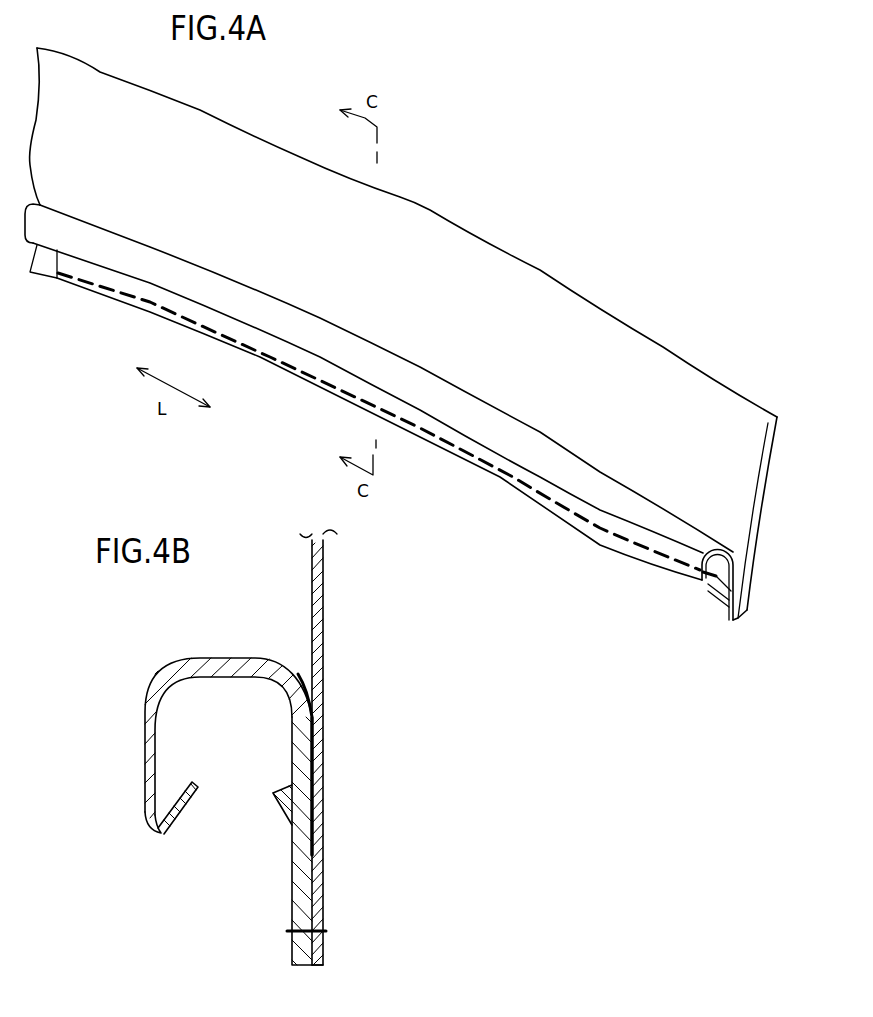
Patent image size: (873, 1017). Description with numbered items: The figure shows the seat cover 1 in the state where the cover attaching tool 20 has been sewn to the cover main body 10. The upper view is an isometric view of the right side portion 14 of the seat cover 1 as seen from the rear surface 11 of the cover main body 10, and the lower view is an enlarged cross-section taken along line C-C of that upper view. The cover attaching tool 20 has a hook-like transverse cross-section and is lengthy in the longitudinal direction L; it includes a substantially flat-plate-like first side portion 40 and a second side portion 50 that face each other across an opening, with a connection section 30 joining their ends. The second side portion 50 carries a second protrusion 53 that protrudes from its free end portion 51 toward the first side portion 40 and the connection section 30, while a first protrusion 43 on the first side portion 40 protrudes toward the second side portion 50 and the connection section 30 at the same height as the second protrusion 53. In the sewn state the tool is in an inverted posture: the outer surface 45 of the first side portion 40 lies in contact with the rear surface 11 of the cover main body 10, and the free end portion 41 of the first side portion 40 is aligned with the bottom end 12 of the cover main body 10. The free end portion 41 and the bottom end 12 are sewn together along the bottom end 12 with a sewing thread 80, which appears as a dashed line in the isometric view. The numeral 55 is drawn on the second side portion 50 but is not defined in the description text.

In FIG. 4A, the seat cover 1 is at (573, 230).
In FIG. 4B, the seat cover 1 is at (363, 637).
In FIG. 4A, the cover main body 10 is at (457, 222).
In FIG. 4B, the cover main body 10 is at (312, 593).
In FIG. 4A, the rear surface 11 is at (510, 328).
In FIG. 4B, the rear surface 11 is at (310, 630).
In FIG. 4A, the bottom end 12 is at (747, 607).
In FIG. 4B, the bottom end 12 is at (321, 953).
In FIG. 4A, the right side portion 14 is at (687, 387).
In FIG. 4B, the right side portion 14 is at (323, 647).
In FIG. 4A, the cover attaching tool 20 is at (379, 432).
In FIG. 4B, the cover attaching tool 20 is at (221, 791).
In FIG. 4A, the connection section 30 is at (580, 458).
In FIG. 4B, the connection section 30 is at (227, 658).
In FIG. 4A, the first side portion 40 is at (618, 568).
In FIG. 4B, the first side portion 40 is at (293, 841).
In FIG. 4A, the free end portion 41 is at (530, 485).
In FIG. 4B, the free end portion 41 is at (292, 903).
In FIG. 4A, the first protrusion 43 is at (727, 587).
In FIG. 4B, the first protrusion 43 is at (282, 815).
In FIG. 4B, the outer surface 45 is at (323, 753).
In FIG. 4A, the second side portion 50 is at (387, 456).
In FIG. 4B, the second side portion 50 is at (121, 795).
In FIG. 4A, the free end portion 51 is at (718, 573).
In FIG. 4B, the free end portion 51 is at (158, 822).
In FIG. 4A, the second protrusion 53 is at (713, 575).
In FIG. 4B, the second protrusion 53 is at (180, 803).
In FIG. 4A, the inner surface of second side wall 55 is at (600, 507).
In FIG. 4B, the inner surface of second side wall 55 is at (144, 760).
In FIG. 4A, the sewing thread 80 is at (500, 475).
In FIG. 4B, the sewing thread 80 is at (298, 933).